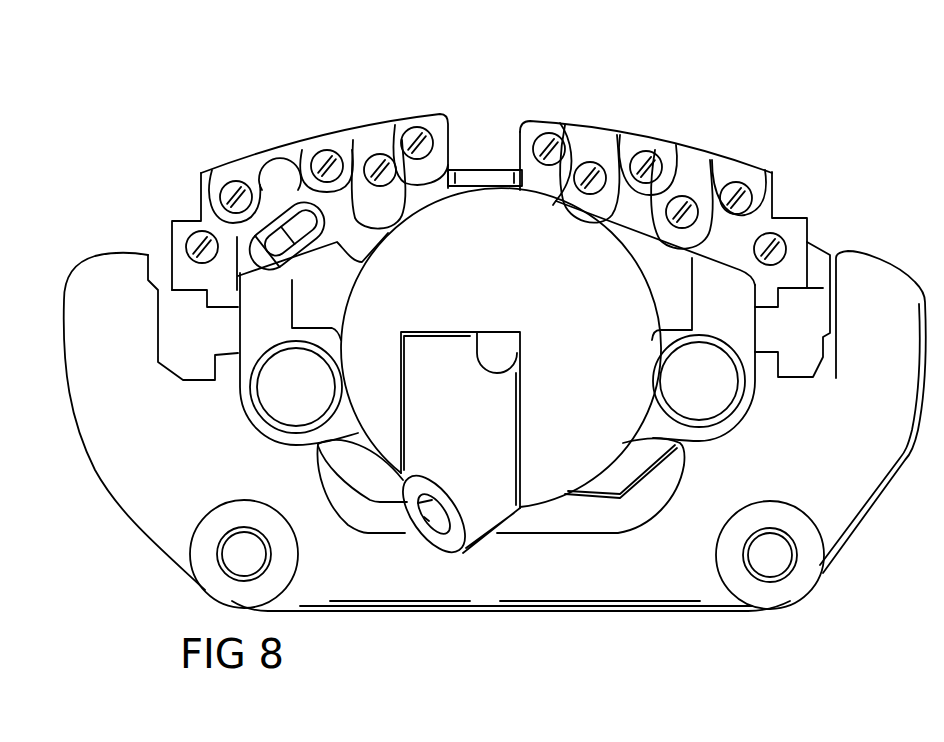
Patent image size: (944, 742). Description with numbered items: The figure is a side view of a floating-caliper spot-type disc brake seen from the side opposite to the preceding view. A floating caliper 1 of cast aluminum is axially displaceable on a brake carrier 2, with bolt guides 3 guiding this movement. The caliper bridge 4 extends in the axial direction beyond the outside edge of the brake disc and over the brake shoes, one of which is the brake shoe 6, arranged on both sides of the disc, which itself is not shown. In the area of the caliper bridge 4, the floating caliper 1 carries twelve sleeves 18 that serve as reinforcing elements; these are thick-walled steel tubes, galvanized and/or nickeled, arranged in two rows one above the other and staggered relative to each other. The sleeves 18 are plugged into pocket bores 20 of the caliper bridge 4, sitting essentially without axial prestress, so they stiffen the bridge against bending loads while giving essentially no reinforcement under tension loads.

The floating caliper 1 is at (489, 160).
The brake carrier 2 is at (620, 611).
The bolt guides 3 is at (270, 398).
The caliper bridge 4 is at (598, 145).
The brake shoe 6 is at (363, 494).
The sleeves 18 is at (550, 133).
The pocket bores 20 is at (543, 133).